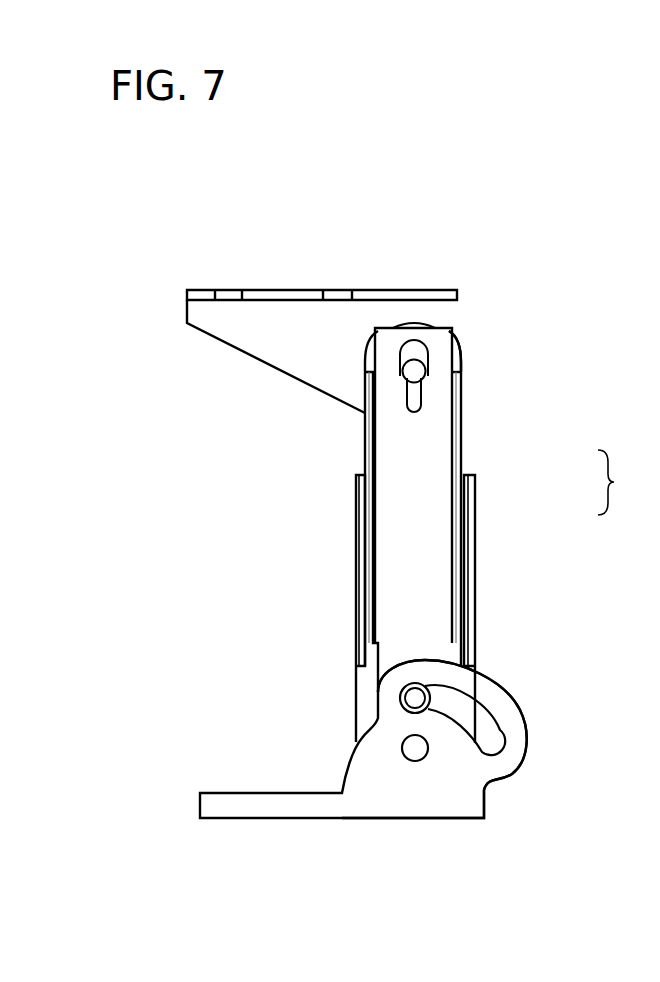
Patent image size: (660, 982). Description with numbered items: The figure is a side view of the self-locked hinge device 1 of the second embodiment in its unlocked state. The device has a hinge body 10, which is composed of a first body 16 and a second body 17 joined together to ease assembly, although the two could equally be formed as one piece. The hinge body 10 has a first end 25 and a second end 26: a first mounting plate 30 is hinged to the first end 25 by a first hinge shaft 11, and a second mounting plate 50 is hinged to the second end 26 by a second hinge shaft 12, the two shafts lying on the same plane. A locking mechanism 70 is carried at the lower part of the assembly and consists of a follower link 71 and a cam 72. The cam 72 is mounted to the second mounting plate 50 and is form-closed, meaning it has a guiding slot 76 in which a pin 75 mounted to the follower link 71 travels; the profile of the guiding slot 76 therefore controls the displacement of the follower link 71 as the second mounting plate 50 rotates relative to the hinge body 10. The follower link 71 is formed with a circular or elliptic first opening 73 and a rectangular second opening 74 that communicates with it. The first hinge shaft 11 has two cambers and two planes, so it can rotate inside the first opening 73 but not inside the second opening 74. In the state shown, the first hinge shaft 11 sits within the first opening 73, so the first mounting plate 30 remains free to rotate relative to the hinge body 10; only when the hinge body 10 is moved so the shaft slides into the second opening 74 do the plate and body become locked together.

The self-locked hinge device 1 is at (363, 163).
The hinge body 10 is at (625, 482).
The first hinge shaft 11 is at (414, 376).
The second hinge shaft 12 is at (412, 748).
The first body 16 is at (461, 428).
The second body 17 is at (468, 548).
The first end 25 is at (457, 362).
The second end 26 is at (438, 694).
The first mounting plate 30 is at (268, 305).
The second mounting plate 50 is at (255, 815).
The locking mechanism 70 is at (443, 327).
The follower link 71 is at (438, 342).
The cam 72 is at (455, 738).
The first opening 73 is at (418, 352).
The second opening 74 is at (412, 402).
The pin 75 is at (412, 698).
The guiding slot 76 is at (492, 731).